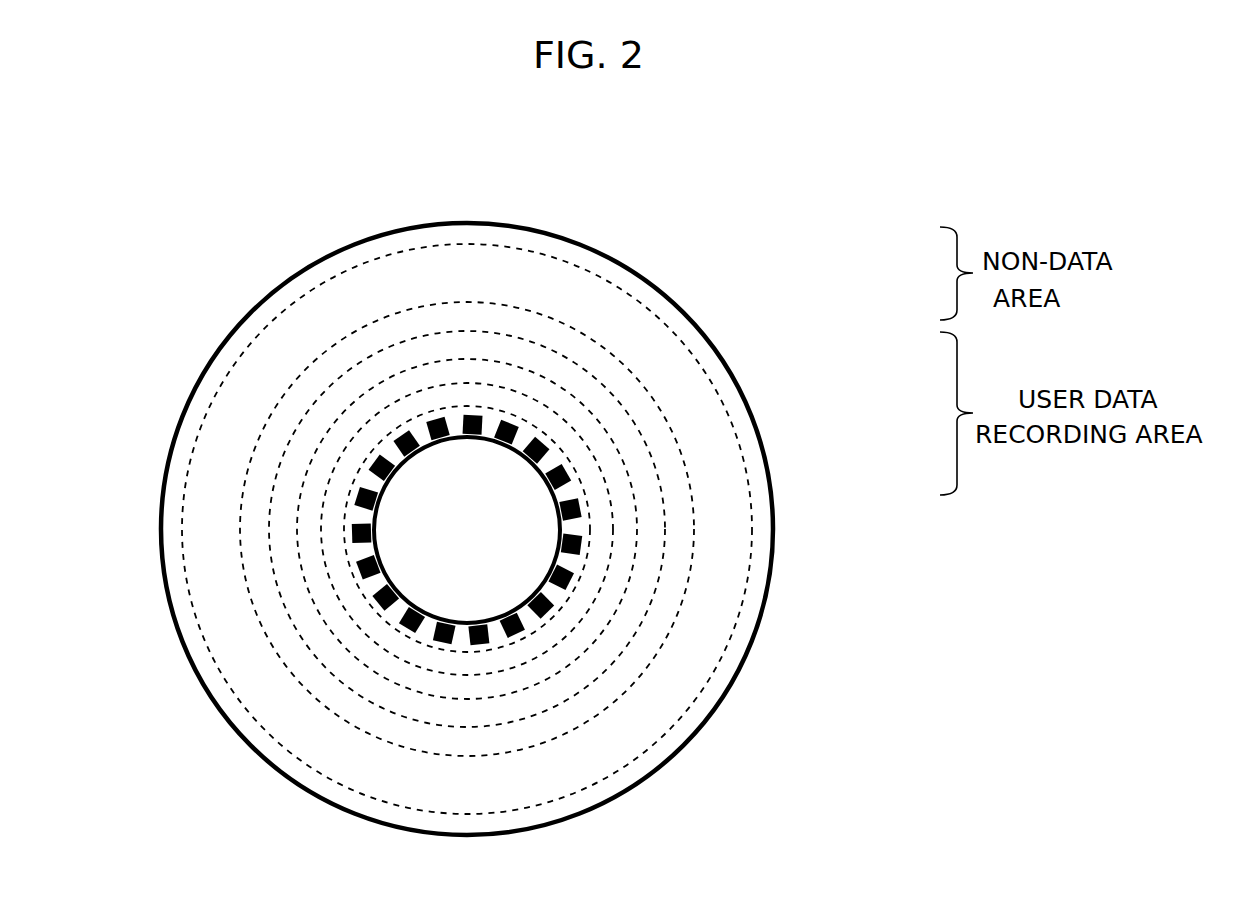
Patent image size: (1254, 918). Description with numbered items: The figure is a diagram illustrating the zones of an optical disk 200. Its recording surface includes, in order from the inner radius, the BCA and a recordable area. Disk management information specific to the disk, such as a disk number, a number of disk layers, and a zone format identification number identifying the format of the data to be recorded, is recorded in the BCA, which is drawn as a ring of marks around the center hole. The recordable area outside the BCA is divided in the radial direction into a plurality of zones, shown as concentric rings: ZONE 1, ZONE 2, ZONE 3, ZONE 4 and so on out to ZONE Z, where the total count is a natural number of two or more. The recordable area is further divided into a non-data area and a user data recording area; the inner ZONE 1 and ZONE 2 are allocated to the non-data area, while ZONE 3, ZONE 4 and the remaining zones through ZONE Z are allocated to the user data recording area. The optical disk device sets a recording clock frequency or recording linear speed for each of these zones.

The optical disk 200 is at (550, 230).
The element BCA is at (508, 423).
The zone 1 ZONE 1 is at (547, 420).
The zone 2 ZONE 2 is at (590, 430).
The zone 3 ZONE 3 is at (630, 443).
The zone 4 ZONE 4 is at (673, 483).
The zone Z ZONE Z is at (760, 505).